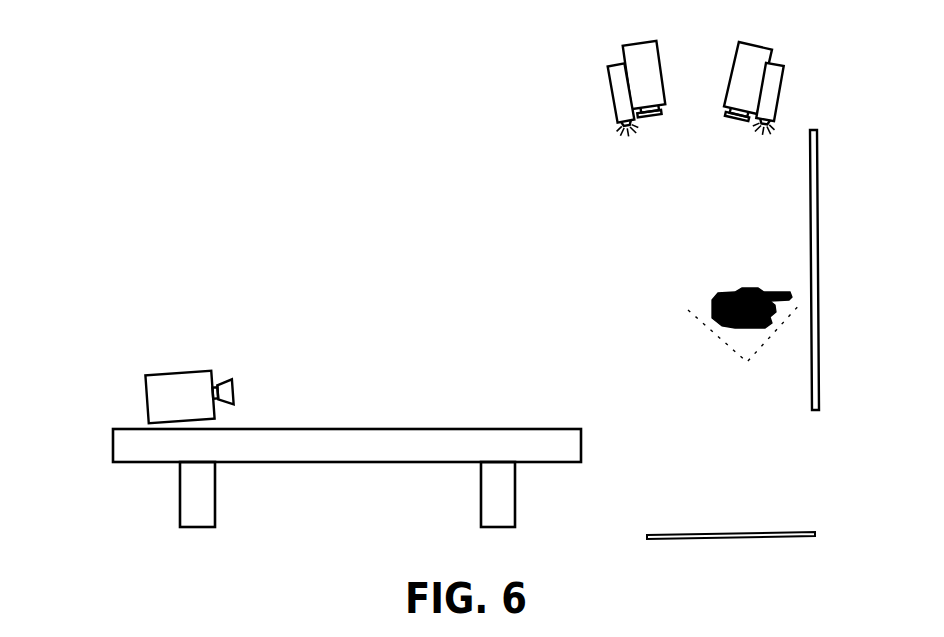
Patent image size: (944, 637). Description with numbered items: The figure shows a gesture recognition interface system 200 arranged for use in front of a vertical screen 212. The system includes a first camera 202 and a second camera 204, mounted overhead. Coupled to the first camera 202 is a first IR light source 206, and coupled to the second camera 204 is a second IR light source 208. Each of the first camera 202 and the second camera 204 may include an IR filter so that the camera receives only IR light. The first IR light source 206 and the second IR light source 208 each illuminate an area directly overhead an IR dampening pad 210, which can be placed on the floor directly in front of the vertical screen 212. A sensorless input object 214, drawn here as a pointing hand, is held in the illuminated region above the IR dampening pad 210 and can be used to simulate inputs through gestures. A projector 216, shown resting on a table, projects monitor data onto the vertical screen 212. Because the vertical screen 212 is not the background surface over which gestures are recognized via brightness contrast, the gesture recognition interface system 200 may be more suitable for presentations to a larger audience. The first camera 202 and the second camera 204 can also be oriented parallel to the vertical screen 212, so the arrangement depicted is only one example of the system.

The gesture recognition interface system 200 is at (121, 46).
The first camera 202 is at (621, 52).
The second camera 204 is at (772, 53).
The first IR light source 206 is at (615, 103).
The second IR light source 208 is at (782, 93).
The IR dampening pad 210 is at (748, 540).
The vertical screen 212 is at (815, 257).
The sensorless input object 214 is at (735, 293).
The projector 216 is at (172, 373).